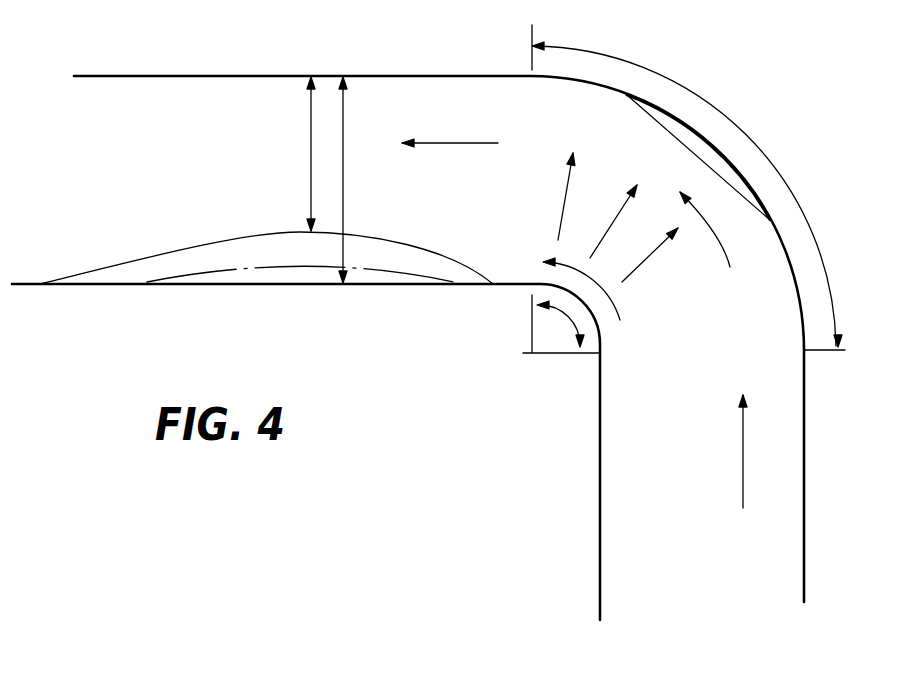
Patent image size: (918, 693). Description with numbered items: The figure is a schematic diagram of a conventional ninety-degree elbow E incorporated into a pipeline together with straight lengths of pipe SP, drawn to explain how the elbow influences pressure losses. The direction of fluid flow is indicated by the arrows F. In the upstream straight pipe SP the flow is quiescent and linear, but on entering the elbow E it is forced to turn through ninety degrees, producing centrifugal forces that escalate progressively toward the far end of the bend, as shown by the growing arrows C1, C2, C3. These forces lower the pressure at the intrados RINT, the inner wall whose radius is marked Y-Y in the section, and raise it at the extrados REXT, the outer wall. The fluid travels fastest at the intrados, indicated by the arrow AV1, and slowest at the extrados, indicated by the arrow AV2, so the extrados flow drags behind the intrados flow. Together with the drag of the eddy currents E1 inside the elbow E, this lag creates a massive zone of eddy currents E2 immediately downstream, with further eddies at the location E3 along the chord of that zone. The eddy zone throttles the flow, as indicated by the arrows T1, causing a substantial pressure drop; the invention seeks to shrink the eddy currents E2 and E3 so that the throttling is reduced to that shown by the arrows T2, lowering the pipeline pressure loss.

The straight length of pipe SP is at (215, 76).
The throttling action arrow T1 is at (311, 165).
The reduced throttling action arrow T2 is at (343, 182).
The fluid flow direction arrow F is at (463, 141).
The extrados REXT is at (636, 56).
The eddy currents in elbow E1 is at (720, 158).
The elbow E is at (743, 173).
The centrifugal force arrow C1 is at (635, 272).
The centrifugal force arrow C2 is at (606, 235).
The centrifugal force arrow C3 is at (566, 195).
The intrados velocity arrow AV1 is at (620, 320).
The extrados velocity arrow AV2 is at (730, 267).
The zone of eddy currents E2 is at (180, 263).
The eddy current location E3 is at (344, 273).
The section plane Y-Y is at (524, 354).
The intrados RINT is at (581, 348).